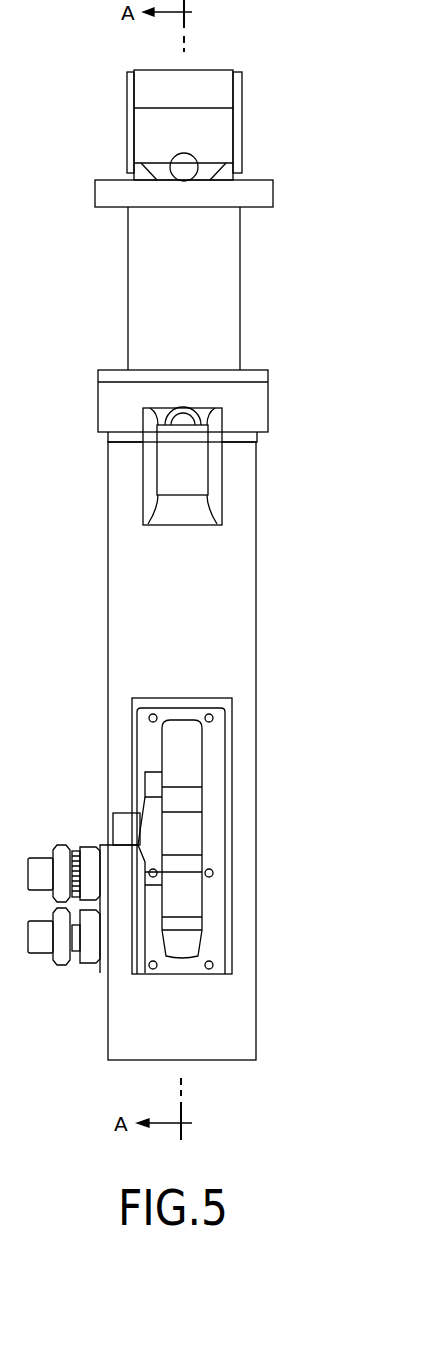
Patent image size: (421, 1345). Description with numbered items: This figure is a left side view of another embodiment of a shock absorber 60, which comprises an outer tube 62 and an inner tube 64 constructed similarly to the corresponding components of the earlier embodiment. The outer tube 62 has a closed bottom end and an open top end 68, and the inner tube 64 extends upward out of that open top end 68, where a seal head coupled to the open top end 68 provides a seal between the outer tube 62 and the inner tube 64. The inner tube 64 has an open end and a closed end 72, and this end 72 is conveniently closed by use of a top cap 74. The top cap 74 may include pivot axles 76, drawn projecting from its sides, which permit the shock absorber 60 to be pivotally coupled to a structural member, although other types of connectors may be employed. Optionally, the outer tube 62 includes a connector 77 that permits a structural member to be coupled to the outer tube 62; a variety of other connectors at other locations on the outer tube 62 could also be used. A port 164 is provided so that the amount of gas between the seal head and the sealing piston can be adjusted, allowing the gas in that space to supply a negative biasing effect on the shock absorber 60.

The shock absorber 60 is at (278, 312).
The outer tube 62 is at (240, 622).
The inner tube 64 is at (236, 340).
The open top end 68 is at (125, 370).
The closed end 72 is at (241, 209).
The top cap 74 is at (215, 125).
The pivot axles 76 is at (244, 85).
The connector 77 is at (200, 466).
The port 164 is at (203, 418).